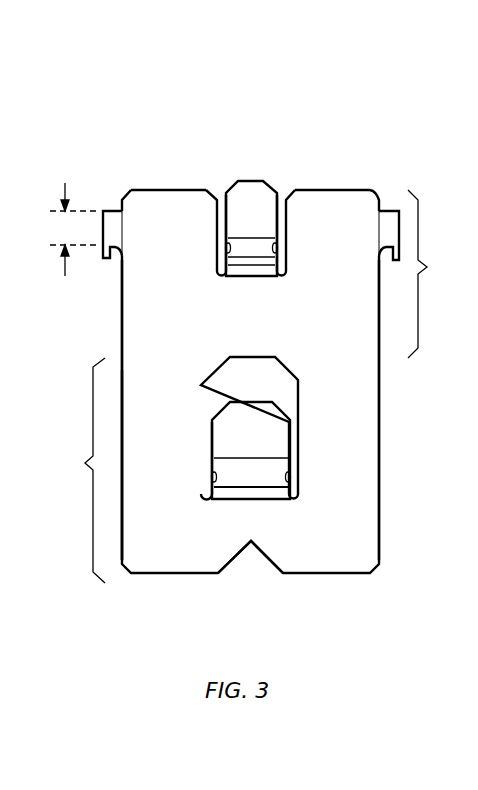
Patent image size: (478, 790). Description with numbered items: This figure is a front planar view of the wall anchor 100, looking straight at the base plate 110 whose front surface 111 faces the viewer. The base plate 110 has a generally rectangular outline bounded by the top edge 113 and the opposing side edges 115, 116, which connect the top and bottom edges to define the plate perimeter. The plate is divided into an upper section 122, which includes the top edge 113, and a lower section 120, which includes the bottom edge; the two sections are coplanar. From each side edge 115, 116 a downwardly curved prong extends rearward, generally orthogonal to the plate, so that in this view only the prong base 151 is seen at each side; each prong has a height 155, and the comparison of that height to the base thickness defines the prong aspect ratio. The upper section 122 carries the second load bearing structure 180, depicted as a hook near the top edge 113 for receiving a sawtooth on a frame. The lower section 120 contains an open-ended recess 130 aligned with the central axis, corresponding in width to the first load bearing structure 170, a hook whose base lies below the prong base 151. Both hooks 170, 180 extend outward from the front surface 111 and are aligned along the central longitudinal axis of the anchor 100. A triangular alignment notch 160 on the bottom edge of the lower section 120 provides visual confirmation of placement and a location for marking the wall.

The wall anchor 100 is at (113, 102).
The base plate 110 is at (199, 212).
The front surface 111 is at (341, 208).
The top edge 113 is at (162, 190).
The side edge 115 is at (380, 440).
The side edge 116 is at (122, 316).
The lower section 120 is at (82, 470).
The upper section 122 is at (428, 274).
The recess 130 is at (280, 386).
The prong base 151 is at (112, 220).
The prong height 155 is at (71, 229).
The alignment notch 160 is at (251, 548).
The first load bearing structure 170 is at (260, 433).
The second load bearing structure 180 is at (259, 198).